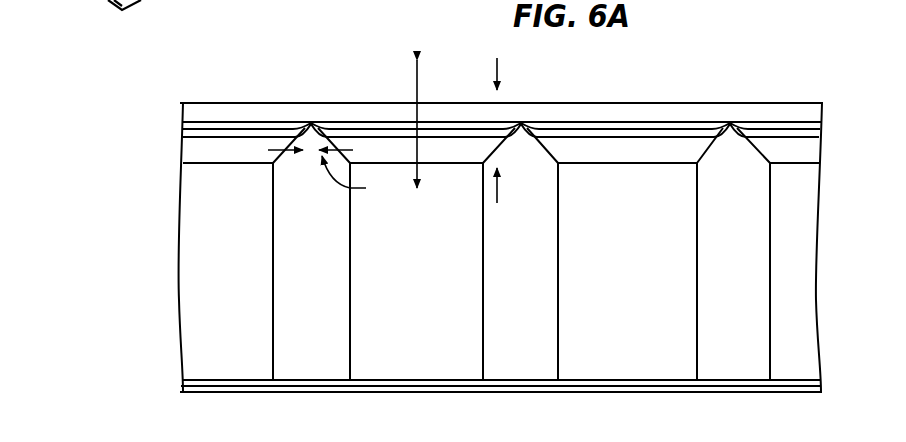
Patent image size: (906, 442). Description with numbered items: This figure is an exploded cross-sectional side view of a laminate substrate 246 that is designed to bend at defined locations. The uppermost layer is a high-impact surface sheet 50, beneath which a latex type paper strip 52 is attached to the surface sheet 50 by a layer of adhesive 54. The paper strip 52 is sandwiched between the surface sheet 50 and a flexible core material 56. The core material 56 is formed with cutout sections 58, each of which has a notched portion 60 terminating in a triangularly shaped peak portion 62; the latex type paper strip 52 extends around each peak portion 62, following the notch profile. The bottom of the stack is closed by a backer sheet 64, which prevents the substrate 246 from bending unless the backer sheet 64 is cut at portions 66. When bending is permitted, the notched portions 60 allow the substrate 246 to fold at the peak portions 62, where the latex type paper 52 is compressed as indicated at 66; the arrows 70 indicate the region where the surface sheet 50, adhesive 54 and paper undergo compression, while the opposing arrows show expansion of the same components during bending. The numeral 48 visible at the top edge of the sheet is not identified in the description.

The direction arrow 48 is at (214, 14).
The surface sheet 50 is at (247, 103).
The latex type paper strip 52 is at (623, 135).
The adhesive 54 is at (186, 127).
The flexible core material 56 is at (186, 148).
The cutout sections 58 is at (327, 302).
The notched portions 60 is at (416, 87).
The peak portion 62 is at (311, 123).
The backer sheet 64 is at (670, 394).
The cut portions 66 is at (361, 179).
The compression indication 70 is at (496, 71).
The laminate substrate 246 is at (155, 290).